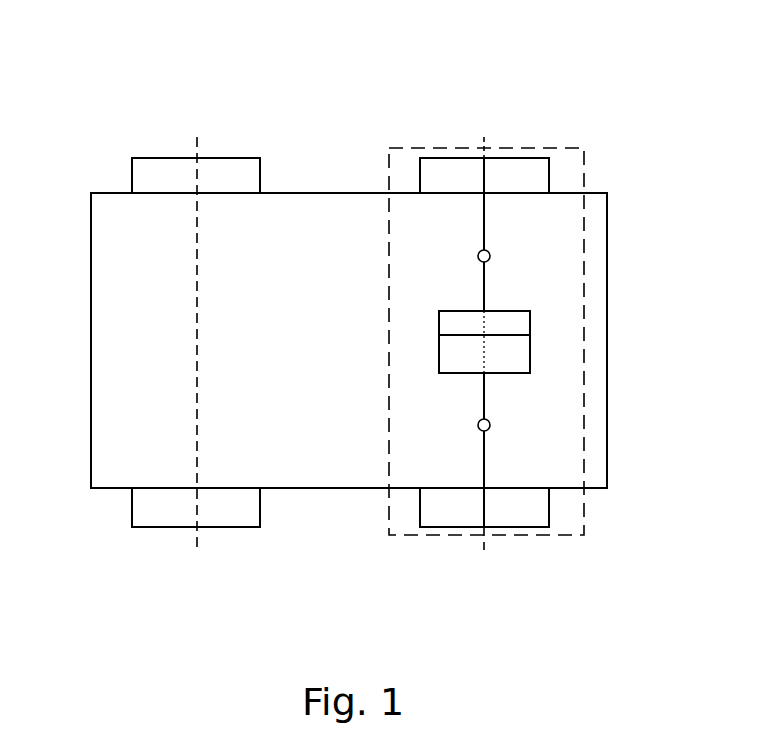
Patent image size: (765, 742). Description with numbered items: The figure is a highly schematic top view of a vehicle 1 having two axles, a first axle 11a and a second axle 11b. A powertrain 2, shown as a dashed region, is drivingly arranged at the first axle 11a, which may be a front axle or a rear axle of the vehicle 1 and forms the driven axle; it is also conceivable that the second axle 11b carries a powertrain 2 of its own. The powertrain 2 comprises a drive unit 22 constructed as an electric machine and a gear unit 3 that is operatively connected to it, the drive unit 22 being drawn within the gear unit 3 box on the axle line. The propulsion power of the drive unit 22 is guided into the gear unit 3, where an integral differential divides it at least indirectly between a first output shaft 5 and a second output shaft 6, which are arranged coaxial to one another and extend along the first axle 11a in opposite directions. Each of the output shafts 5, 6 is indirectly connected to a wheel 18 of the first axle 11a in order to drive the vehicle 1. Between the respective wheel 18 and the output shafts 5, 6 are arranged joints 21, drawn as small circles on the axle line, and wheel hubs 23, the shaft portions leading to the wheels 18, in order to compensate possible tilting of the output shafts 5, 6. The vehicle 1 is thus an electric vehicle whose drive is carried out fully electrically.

The vehicle 1 is at (90, 111).
The powertrain 2 is at (438, 382).
The gear unit 3 is at (520, 322).
The first output shaft 5 is at (484, 394).
The second output shaft 6 is at (484, 282).
The first axle 11a is at (526, 295).
The second axle 11b is at (243, 297).
The wheel 18 is at (444, 170).
The joint 21 is at (602, 339).
The drive unit 22 is at (508, 356).
The wheel hub 23 is at (605, 339).